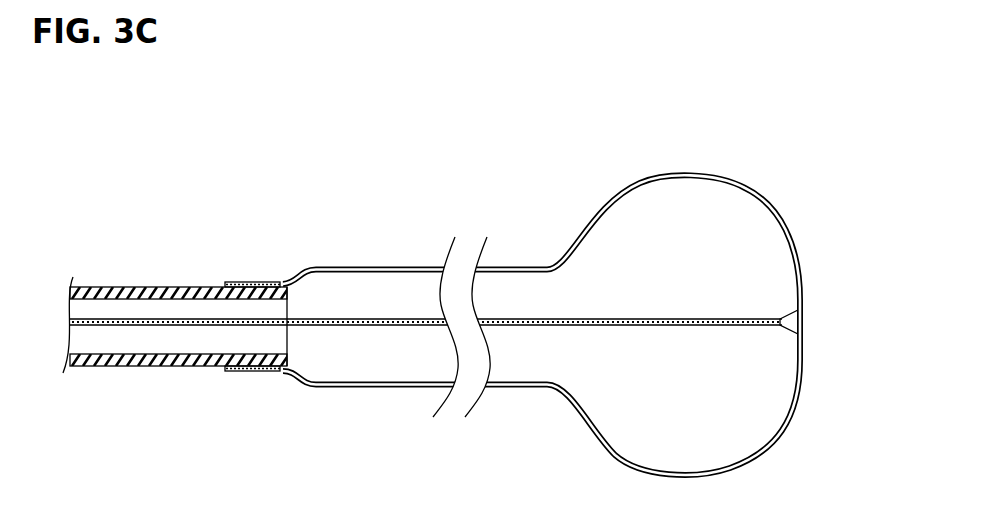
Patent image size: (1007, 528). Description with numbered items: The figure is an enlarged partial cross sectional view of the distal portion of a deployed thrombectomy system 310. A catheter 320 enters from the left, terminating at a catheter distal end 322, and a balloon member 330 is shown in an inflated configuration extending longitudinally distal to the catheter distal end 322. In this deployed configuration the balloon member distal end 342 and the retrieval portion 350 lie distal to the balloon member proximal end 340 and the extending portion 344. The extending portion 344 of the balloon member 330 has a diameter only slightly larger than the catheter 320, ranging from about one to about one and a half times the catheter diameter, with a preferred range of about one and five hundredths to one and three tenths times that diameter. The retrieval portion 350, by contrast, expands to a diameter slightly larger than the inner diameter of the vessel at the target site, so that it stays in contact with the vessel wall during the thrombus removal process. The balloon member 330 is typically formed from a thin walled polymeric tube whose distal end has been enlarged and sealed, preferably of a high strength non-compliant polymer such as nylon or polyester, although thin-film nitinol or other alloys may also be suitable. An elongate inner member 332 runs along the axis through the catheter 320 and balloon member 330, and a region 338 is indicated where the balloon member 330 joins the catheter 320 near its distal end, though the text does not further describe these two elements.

The thrombectomy system 310 is at (565, 145).
The catheter 320 is at (95, 286).
The catheter distal end 322 is at (175, 286).
The bond region 338 is at (256, 283).
The core wire 332 is at (122, 326).
The balloon member 330 is at (505, 387).
The balloon member proximal end 340 is at (328, 388).
The extending portion 344 is at (412, 387).
The retrieval portion 350 is at (576, 415).
The balloon member distal end 342 is at (800, 394).